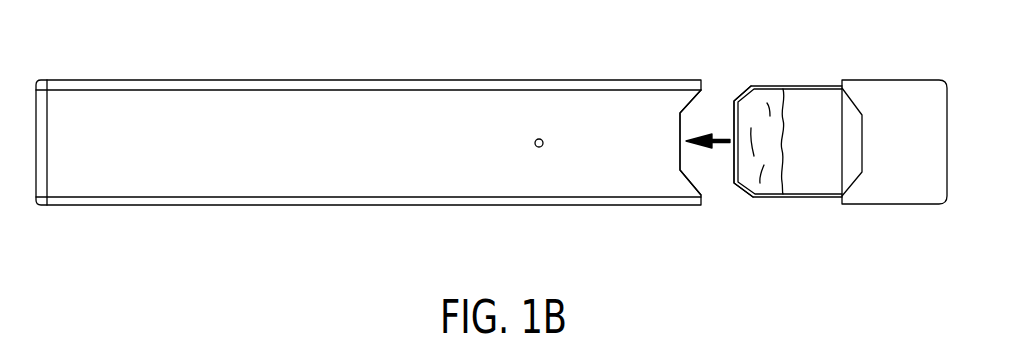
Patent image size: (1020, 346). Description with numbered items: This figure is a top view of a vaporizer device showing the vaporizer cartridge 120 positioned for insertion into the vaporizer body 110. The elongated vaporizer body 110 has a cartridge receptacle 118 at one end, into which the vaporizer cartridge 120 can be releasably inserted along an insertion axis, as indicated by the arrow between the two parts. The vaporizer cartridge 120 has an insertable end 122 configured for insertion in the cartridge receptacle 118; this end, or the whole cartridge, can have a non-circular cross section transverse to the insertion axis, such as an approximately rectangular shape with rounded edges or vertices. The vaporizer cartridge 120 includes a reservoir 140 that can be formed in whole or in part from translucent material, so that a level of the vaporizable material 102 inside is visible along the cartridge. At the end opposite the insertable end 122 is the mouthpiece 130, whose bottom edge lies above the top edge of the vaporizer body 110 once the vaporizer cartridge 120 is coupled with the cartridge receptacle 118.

The vaporizer body 110 is at (173, 110).
The cartridge receptacle 118 is at (701, 101).
The vaporizer cartridge 120 is at (866, 70).
The insertable end 122 is at (738, 192).
The vaporizable material 102 is at (772, 188).
The reservoir 140 is at (827, 182).
The mouthpiece 130 is at (908, 190).